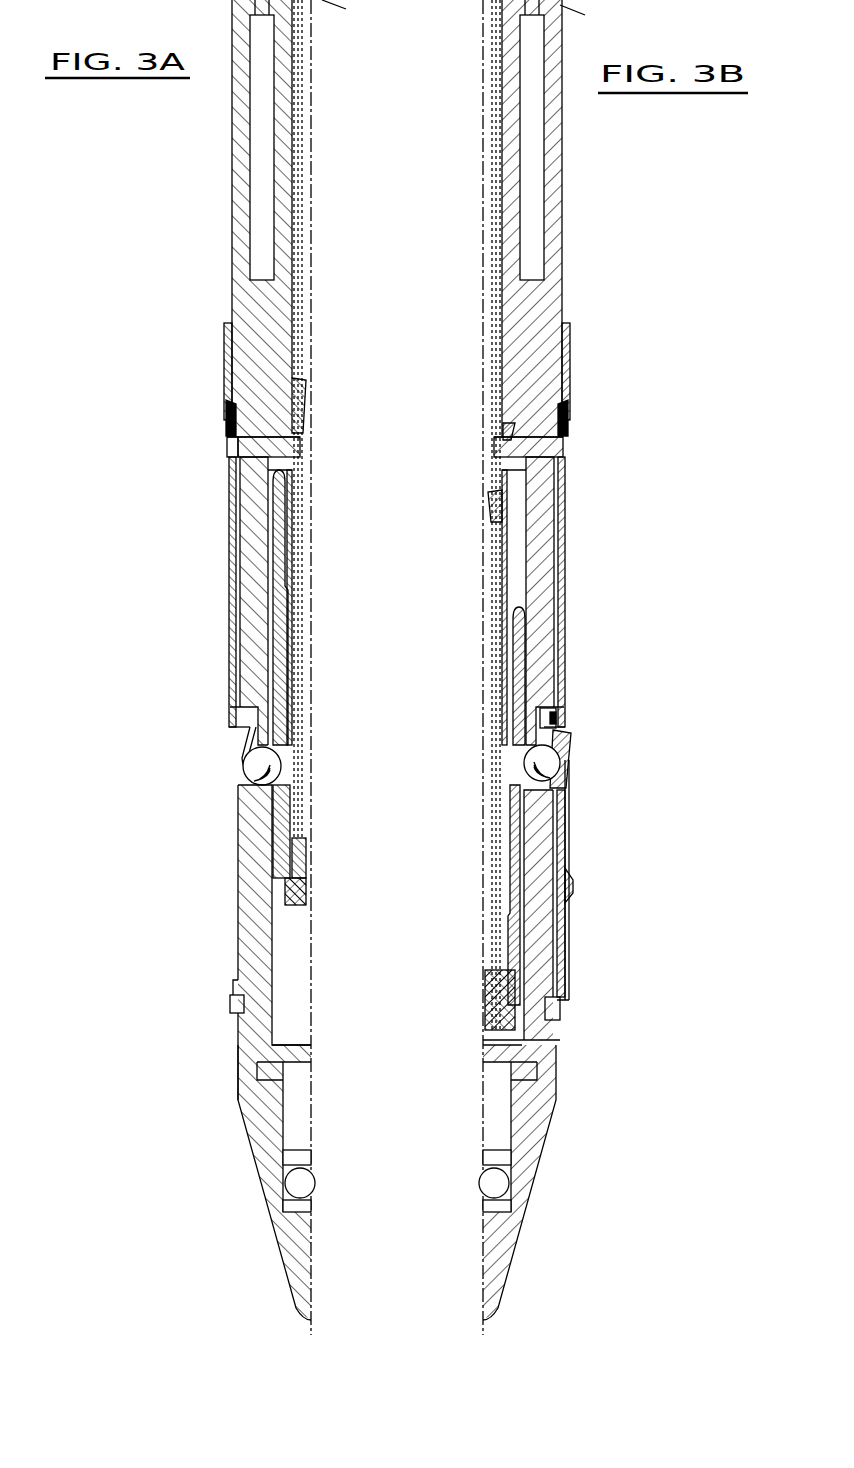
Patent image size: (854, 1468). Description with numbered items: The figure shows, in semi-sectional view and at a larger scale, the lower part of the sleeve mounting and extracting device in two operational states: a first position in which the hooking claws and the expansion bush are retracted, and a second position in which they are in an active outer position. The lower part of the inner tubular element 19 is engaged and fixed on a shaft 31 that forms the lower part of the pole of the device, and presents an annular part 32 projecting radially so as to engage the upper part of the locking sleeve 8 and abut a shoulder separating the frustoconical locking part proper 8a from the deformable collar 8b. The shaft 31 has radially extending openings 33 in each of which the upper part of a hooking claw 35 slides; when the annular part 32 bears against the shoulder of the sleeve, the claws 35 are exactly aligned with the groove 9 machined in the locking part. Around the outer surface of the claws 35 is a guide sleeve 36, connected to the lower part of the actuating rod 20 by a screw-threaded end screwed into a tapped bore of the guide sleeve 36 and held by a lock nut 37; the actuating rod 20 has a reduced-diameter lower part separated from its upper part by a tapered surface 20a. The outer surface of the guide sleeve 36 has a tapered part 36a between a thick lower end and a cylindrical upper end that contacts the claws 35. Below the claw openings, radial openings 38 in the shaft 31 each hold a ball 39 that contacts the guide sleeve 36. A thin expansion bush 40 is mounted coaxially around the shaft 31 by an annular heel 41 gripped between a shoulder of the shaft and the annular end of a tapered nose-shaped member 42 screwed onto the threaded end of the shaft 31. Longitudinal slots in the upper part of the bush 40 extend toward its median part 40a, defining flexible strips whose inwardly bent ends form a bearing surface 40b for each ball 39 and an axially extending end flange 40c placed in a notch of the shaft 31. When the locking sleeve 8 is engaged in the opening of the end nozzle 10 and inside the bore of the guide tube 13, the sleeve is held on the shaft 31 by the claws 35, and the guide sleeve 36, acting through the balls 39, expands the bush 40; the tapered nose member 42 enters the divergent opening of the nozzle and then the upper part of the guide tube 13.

In FIG. 3A, the locking sleeve 8 is at (233, 476).
In FIG. 3B, the locking sleeve 8 is at (563, 515).
In FIG. 3A, the locking part proper 8a is at (232, 568).
In FIG. 3B, the locking part proper 8a is at (554, 592).
In FIG. 3A, the deformable collar 8b is at (218, 322).
In FIG. 3B, the deformable collar 8b is at (572, 330).
In FIG. 3A, the groove 9 is at (230, 442).
In FIG. 3A, the direction arrow 10 is at (150, 562).
In FIG. 3B, the direction arrow 10 is at (635, 610).
In FIG. 3B, the guide tube 13 is at (570, 769).
In FIG. 3A, the inner tubular element 19 is at (238, 133).
In FIG. 3B, the inner tubular element 19 is at (553, 142).
In FIG. 3A, the actuating rod 20 is at (300, 245).
In FIG. 3B, the actuating rod 20 is at (483, 305).
In FIG. 3A, the tapered surface 20a is at (297, 405).
In FIG. 3B, the tapered surface 20a is at (513, 548).
In FIG. 3A, the shaft 31 is at (190, 683).
In FIG. 3B, the shaft 31 is at (577, 657).
In FIG. 3A, the annular part 32 is at (228, 345).
In FIG. 3B, the annular part 32 is at (572, 353).
In FIG. 3A, the radially extending openings 33 is at (232, 415).
In FIG. 3B, the radially extending openings 33 is at (578, 390).
In FIG. 3A, the hooking claw 35 is at (262, 450).
In FIG. 3B, the hooking claw 35 is at (560, 497).
In FIG. 3A, the guide sleeve 36 is at (280, 603).
In FIG. 3B, the guide sleeve 36 is at (567, 693).
In FIG. 3A, the tapered part 36a is at (278, 697).
In FIG. 3B, the tapered part 36a is at (540, 822).
In FIG. 3A, the lock nut 37 is at (292, 895).
In FIG. 3B, the lock nut 37 is at (560, 1025).
In FIG. 3A, the radial openings 38 is at (258, 770).
In FIG. 3B, the radial openings 38 is at (560, 790).
In FIG. 3A, the ball 39 is at (250, 752).
In FIG. 3B, the ball 39 is at (575, 755).
In FIG. 3A, the expansion bush 40 is at (240, 968).
In FIG. 3B, the expansion bush 40 is at (562, 972).
In FIG. 3B, the median part 40a is at (570, 882).
In FIG. 3B, the bearing surface 40b is at (570, 780).
In FIG. 3B, the end flange 40c is at (565, 720).
In FIG. 3A, the annular heel 41 is at (237, 1005).
In FIG. 3B, the annular heel 41 is at (562, 1006).
In FIG. 3A, the tapered nose-shaped member 42 is at (255, 1105).
In FIG. 3B, the tapered nose-shaped member 42 is at (530, 1122).